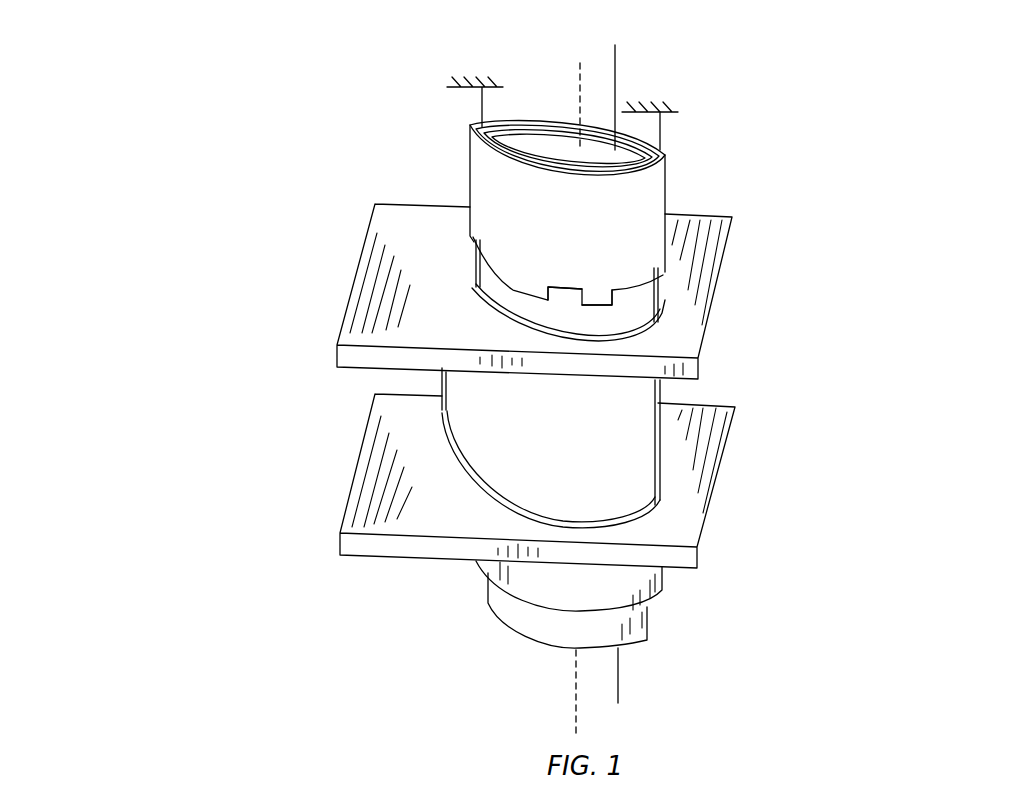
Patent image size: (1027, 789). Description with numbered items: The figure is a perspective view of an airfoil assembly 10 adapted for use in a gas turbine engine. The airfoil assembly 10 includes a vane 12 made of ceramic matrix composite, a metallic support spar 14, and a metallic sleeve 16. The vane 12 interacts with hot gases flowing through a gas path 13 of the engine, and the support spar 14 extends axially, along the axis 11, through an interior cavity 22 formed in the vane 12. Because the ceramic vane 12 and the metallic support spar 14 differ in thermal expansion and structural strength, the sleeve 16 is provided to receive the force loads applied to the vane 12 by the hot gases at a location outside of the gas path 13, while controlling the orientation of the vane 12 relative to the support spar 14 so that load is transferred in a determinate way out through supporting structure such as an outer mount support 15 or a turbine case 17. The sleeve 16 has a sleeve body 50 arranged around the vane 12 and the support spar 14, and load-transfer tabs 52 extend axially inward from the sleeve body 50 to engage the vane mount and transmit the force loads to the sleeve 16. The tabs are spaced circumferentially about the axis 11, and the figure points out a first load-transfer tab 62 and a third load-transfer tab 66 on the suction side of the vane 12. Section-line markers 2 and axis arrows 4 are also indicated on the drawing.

The airfoil assembly 10 is at (163, 117).
The section line 2 is at (329, 260).
The axis 4 is at (577, 43).
The axis 11 is at (575, 667).
The vane 12 is at (310, 398).
The gas path 13 is at (342, 455).
The support spar 14 is at (546, 148).
The outer mount support 15 is at (463, 88).
The sleeve 16 is at (702, 120).
The turbine case 17 is at (677, 116).
The interior cavity 22 is at (500, 133).
The sleeve body 50 is at (680, 178).
The load-transfer tabs 52 is at (599, 341).
The first load-transfer tab 62 is at (515, 291).
The third load-transfer tab 66 is at (612, 314).